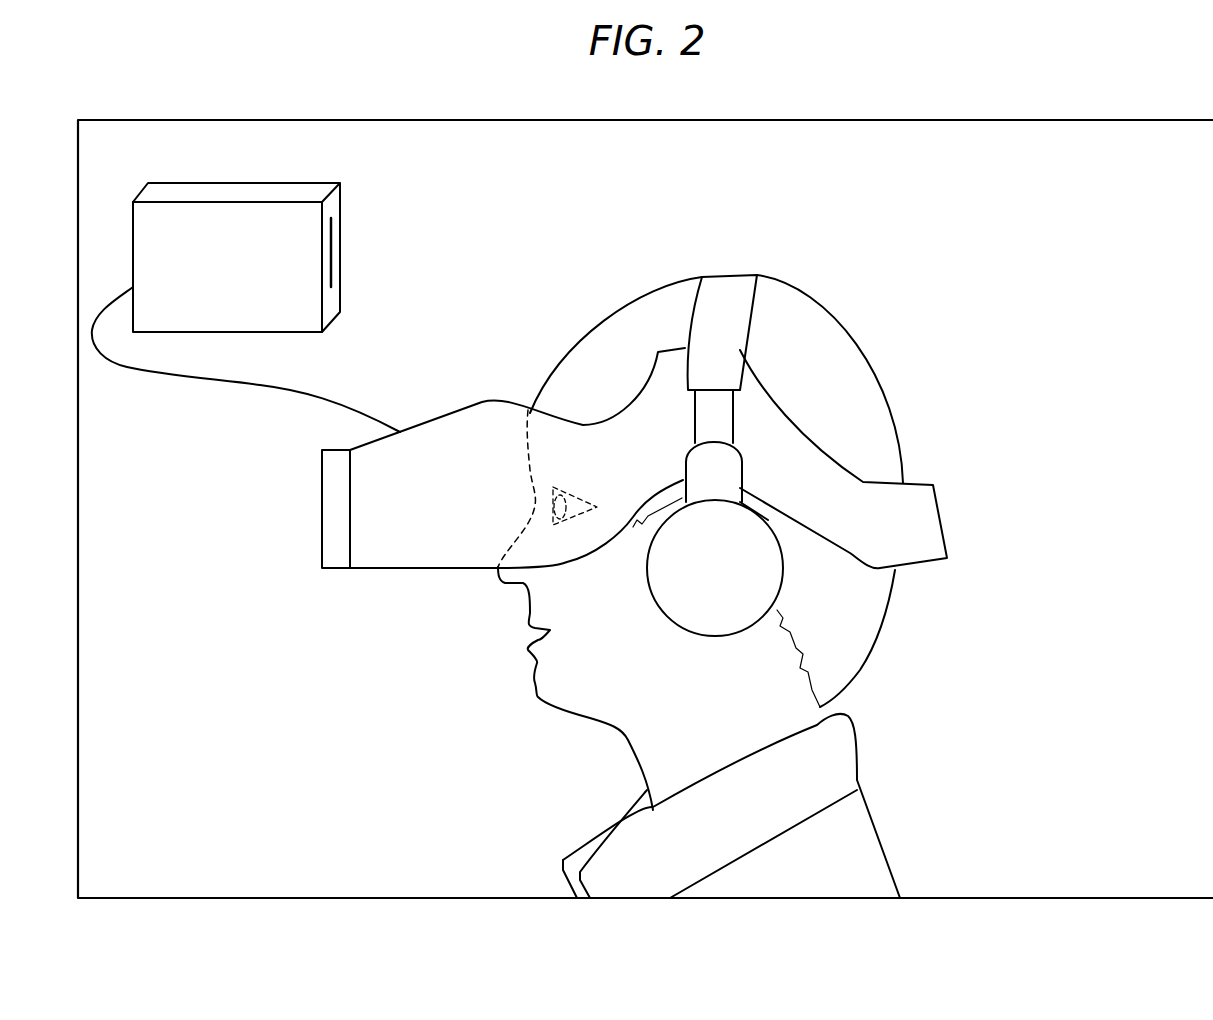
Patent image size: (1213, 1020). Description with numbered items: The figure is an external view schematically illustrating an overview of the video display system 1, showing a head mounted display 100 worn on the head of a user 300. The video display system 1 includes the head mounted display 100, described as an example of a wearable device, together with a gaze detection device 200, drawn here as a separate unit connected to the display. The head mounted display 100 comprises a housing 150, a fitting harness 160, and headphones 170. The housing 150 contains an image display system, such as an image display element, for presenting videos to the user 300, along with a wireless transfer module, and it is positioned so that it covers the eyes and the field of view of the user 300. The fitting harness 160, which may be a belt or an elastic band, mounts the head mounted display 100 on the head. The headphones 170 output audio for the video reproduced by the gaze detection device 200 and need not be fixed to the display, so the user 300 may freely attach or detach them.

The video display system 1 is at (687, 120).
The head mounted display 100 is at (455, 382).
The housing 150 is at (467, 570).
The fitting harness 160 is at (944, 521).
The headphones 170 is at (727, 272).
The gaze detection device 200 is at (344, 210).
The user 300 is at (857, 338).